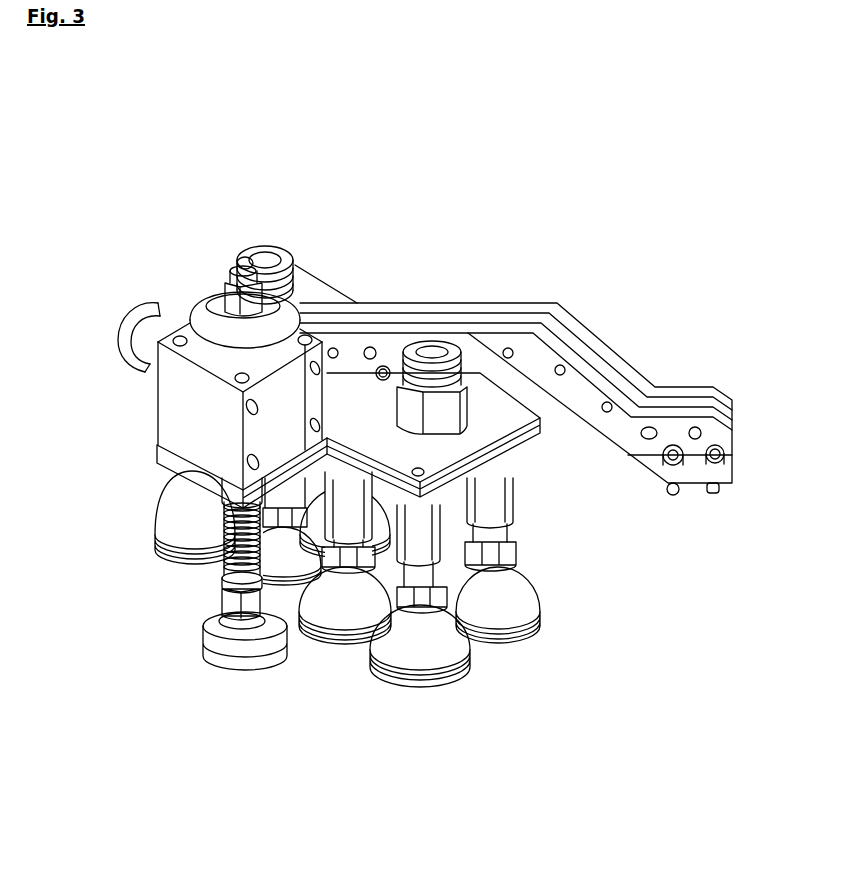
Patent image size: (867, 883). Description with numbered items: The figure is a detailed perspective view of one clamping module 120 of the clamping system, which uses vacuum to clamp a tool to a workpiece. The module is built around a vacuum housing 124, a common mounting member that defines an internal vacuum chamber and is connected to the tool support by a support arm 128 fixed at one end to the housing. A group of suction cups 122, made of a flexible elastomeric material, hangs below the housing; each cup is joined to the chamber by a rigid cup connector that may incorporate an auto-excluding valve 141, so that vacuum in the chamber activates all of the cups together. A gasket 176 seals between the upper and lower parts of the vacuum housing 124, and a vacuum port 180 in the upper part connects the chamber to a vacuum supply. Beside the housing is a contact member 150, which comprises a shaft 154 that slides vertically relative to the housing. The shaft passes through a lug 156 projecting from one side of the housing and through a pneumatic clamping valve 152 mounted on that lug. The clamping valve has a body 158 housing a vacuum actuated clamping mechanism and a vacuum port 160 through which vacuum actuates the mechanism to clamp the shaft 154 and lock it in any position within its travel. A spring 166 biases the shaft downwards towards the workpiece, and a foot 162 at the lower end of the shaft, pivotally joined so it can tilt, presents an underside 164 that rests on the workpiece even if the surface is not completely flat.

The clamping module 120 is at (564, 647).
The suction cup 122 is at (417, 690).
The vacuum housing 124 is at (540, 450).
The support arm 128 is at (401, 312).
The auto-excluding valve 141 is at (510, 488).
The contact member 150 is at (215, 589).
The pneumatic clamping valve 152 is at (207, 287).
The shaft 154 is at (236, 250).
The lug 156 is at (156, 457).
The body 158 is at (190, 410).
The vacuum port 160 is at (127, 322).
The foot 162 is at (207, 650).
The underside of the foot 164 is at (236, 672).
The spring 166 is at (220, 566).
The gasket 176 is at (547, 409).
The vacuum port 180 is at (265, 245).